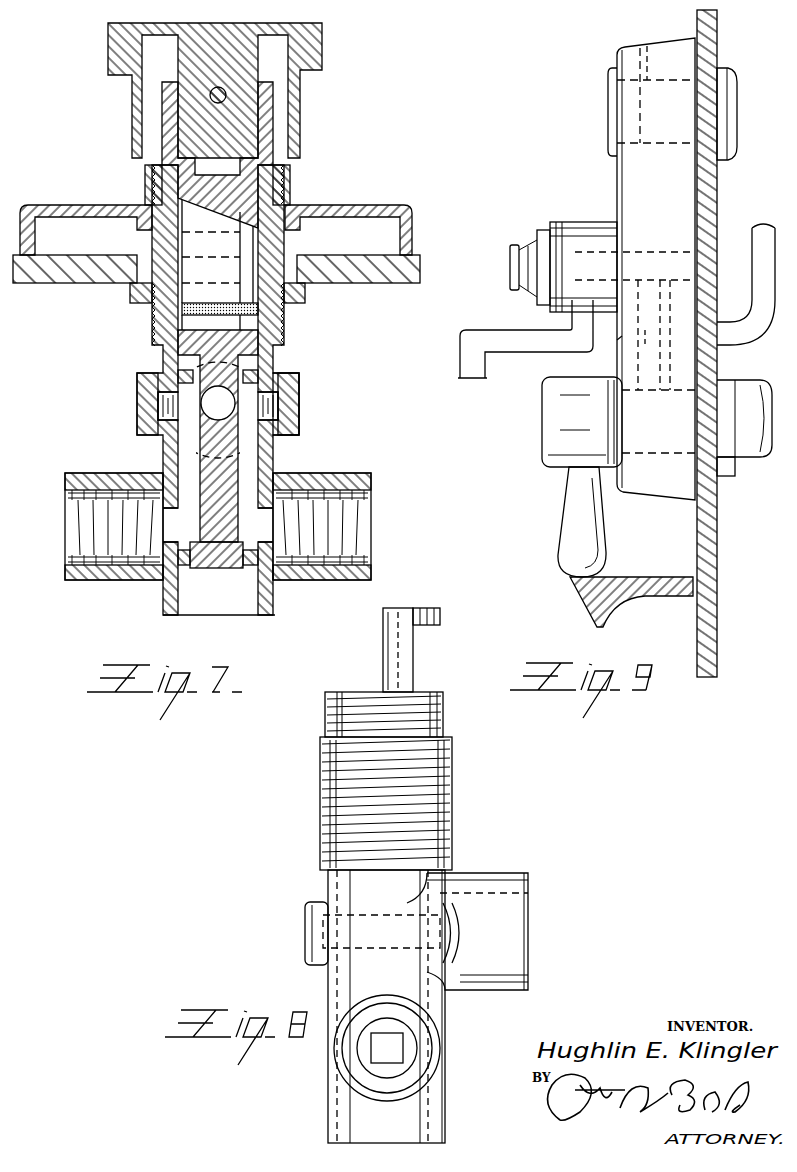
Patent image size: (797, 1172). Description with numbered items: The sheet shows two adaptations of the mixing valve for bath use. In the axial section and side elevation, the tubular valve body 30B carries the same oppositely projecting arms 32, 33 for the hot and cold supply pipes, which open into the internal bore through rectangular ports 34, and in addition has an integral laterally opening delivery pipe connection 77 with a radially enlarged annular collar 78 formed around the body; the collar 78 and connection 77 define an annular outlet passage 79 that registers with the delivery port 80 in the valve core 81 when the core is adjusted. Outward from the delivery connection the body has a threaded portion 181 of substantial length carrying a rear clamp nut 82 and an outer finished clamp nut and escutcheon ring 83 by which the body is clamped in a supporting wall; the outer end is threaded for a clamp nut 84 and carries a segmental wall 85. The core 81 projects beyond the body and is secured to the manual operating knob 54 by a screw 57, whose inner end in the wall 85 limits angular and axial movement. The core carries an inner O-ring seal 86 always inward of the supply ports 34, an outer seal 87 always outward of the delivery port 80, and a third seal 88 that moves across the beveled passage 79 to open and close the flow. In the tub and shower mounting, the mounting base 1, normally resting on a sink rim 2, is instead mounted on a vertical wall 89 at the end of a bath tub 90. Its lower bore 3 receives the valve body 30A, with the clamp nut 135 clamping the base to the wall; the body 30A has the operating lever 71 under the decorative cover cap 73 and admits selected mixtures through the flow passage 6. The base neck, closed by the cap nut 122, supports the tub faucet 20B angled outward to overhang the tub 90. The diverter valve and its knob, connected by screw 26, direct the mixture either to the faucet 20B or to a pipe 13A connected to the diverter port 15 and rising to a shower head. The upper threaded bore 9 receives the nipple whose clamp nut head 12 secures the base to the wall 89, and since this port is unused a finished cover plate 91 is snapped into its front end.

In FIG. 7, the chambered cap or knob 54 is at (108, 57).
In FIG. 7, the screw 57 is at (228, 96).
In FIG. 7, the segmental wall 85 is at (273, 126).
In FIG. 8, the segmental wall 85 is at (418, 655).
In FIG. 7, the outer finished clamp nut and escutcheon ring 83 is at (44, 207).
In FIG. 7, the clamp nut 84 is at (146, 178).
In FIG. 7, the rear or inner clamp nut 82 is at (136, 288).
In FIG. 7, the threaded portion 181 is at (152, 333).
In FIG. 8, the threaded portion 181 is at (453, 785).
In FIG. 7, the annular outlet passage 79 is at (155, 385).
In FIG. 8, the annular outlet passage 79 is at (460, 928).
In FIG. 7, the delivery port 80 is at (170, 398).
In FIG. 7, the valve body 30B is at (163, 447).
In FIG. 8, the valve body 30B is at (328, 886).
In FIG. 7, the arm 32 is at (118, 581).
In FIG. 7, the arm 33 is at (333, 581).
In FIG. 8, the arm 33 is at (340, 1074).
In FIG. 7, the rectangular ports 34 is at (270, 527).
In FIG. 8, the rectangular ports 34 is at (372, 1048).
In FIG. 7, the lower or inner O-ring seal 86 is at (190, 569).
In FIG. 7, the valve core 81 is at (255, 463).
In FIG. 7, the radially enlarged annular collar 78 is at (300, 423).
In FIG. 8, the radially enlarged annular collar 78 is at (307, 939).
In FIG. 7, the delivery pipe connection 77 is at (275, 400).
In FIG. 8, the delivery pipe connection 77 is at (507, 876).
In FIG. 7, the third O-ring seal 88 is at (258, 374).
In FIG. 7, the upper or outer seal 87 is at (260, 310).
In FIG. 7, the rim 2 is at (372, 283).
In FIG. 9, the internally threaded bore 9 is at (646, 47).
In FIG. 9, the head of the clamp nut 12 is at (722, 70).
In FIG. 9, the finished cover plate 91 is at (608, 124).
In FIG. 9, the mounting base 1 is at (642, 191).
In FIG. 9, the cap nut 122 is at (540, 235).
In FIG. 9, the screw 26 is at (512, 252).
In FIG. 9, the pipe 13A is at (753, 233).
In FIG. 9, the port 15 is at (681, 312).
In FIG. 9, the tub faucet 20B is at (497, 338).
In FIG. 9, the passage 6 is at (622, 342).
In FIG. 9, the first cylindrical bore 3 is at (651, 386).
In FIG. 9, the valve body 30A is at (760, 373).
In FIG. 9, the outer decorative cover cap 73 is at (556, 448).
In FIG. 9, the clamp nut 135 is at (732, 468).
In FIG. 9, the operating lever 71 is at (568, 546).
In FIG. 9, the bath tub 90 is at (610, 578).
In FIG. 9, the vertical wall 89 is at (718, 516).